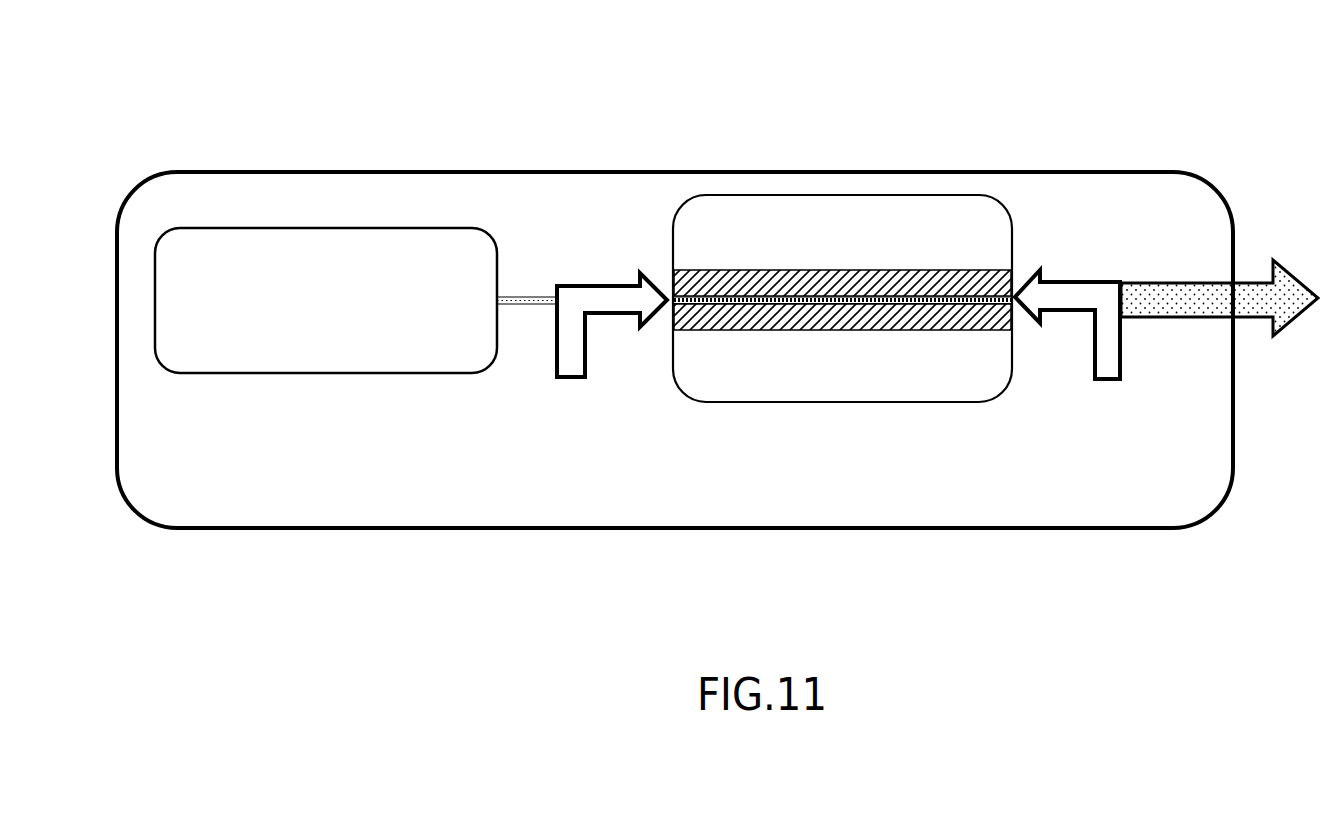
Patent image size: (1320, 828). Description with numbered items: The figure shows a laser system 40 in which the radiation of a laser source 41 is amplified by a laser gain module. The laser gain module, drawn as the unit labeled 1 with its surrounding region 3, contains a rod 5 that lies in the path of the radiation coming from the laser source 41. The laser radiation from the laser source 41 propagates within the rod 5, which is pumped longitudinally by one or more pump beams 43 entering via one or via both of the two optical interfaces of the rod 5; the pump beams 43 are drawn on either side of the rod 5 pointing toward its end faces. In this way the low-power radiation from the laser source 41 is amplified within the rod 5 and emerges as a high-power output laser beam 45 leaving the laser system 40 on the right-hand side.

The laser system 40 is at (765, 44).
The laser source 41 is at (312, 362).
The pump beams 43 is at (572, 378).
The optical waveguide device 1 is at (835, 405).
The cladding 3 is at (903, 227).
The rod 5 is at (735, 297).
The output laser beam 45 is at (1243, 302).